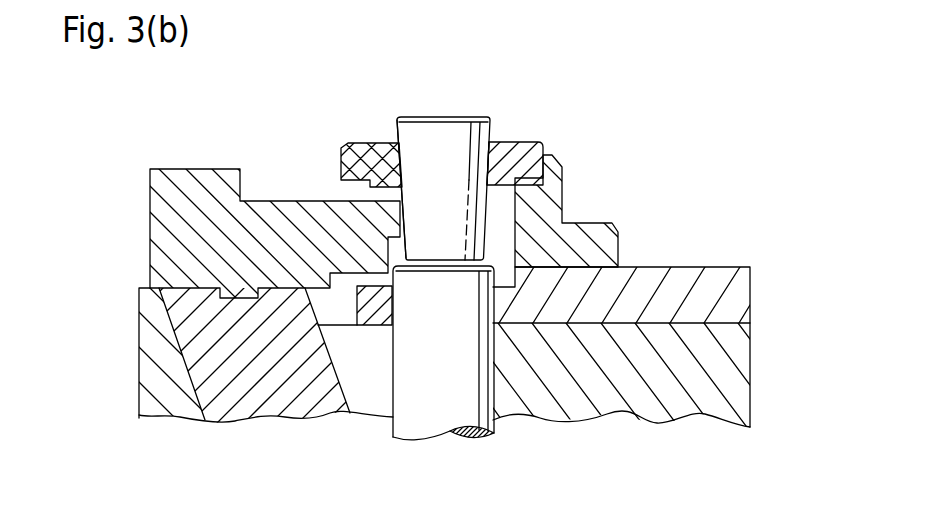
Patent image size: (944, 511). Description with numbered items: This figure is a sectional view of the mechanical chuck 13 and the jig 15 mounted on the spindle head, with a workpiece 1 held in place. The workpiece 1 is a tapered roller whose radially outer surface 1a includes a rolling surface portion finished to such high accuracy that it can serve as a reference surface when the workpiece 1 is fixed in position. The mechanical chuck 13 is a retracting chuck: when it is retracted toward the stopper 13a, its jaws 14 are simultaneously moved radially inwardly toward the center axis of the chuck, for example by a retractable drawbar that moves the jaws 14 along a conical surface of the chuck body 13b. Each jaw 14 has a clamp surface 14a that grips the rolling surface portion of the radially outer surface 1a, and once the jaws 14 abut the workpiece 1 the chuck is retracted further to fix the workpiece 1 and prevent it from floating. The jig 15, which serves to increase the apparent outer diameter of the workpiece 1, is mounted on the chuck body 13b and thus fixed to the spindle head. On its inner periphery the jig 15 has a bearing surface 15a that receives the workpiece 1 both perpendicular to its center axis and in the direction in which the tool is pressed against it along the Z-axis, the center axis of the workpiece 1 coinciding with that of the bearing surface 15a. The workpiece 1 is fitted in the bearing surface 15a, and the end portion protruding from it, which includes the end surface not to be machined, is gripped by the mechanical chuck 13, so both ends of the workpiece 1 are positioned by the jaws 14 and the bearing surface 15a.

The workpiece 1 is at (445, 113).
The radially outer surface 1a is at (407, 223).
The mechanical chuck 13 is at (713, 262).
The stopper 13a is at (434, 410).
The chuck body 13b is at (170, 402).
The jaws 14 is at (287, 213).
The clamp surface 14a is at (400, 181).
The jig 15 is at (537, 158).
The bearing surface 15a is at (487, 161).